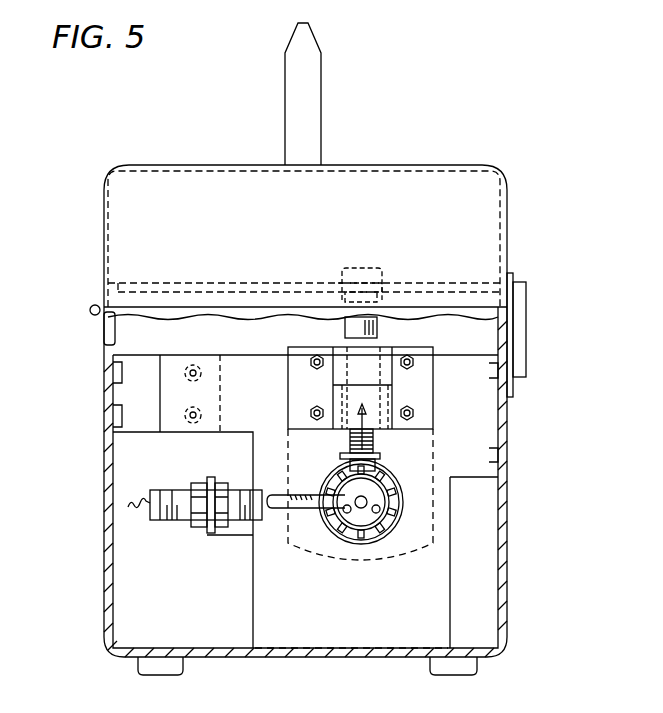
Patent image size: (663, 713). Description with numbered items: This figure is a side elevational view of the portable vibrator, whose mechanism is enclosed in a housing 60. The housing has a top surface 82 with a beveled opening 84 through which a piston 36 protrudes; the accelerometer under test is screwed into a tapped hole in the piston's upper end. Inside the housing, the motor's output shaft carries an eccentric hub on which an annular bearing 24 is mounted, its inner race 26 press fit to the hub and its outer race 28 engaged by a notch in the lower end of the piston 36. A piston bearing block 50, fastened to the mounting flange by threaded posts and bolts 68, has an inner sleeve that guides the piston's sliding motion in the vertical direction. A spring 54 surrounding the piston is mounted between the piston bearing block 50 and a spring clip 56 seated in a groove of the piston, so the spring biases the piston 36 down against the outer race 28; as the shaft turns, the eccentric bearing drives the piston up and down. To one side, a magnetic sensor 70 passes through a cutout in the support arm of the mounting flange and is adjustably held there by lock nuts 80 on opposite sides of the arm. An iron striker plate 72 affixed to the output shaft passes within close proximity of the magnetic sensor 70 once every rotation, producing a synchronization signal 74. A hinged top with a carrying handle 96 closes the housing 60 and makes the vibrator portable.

The carrying handle 96 is at (312, 80).
The beveled opening 84 is at (338, 283).
The piston 36 is at (378, 270).
The top surface 82 is at (445, 283).
The bolts 68 is at (312, 358).
The piston bearing block 50 is at (420, 382).
The spring 54 is at (350, 438).
The spring clip 56 is at (378, 456).
The outer race 28 is at (360, 512).
The inner race 26 is at (340, 540).
The annular bearing 24 is at (372, 540).
The striker plate 72 is at (278, 512).
The magnetic sensor 70 is at (236, 520).
The lock nuts 80 is at (195, 483).
The synchronization signal 74 is at (136, 512).
The housing 60 is at (507, 500).